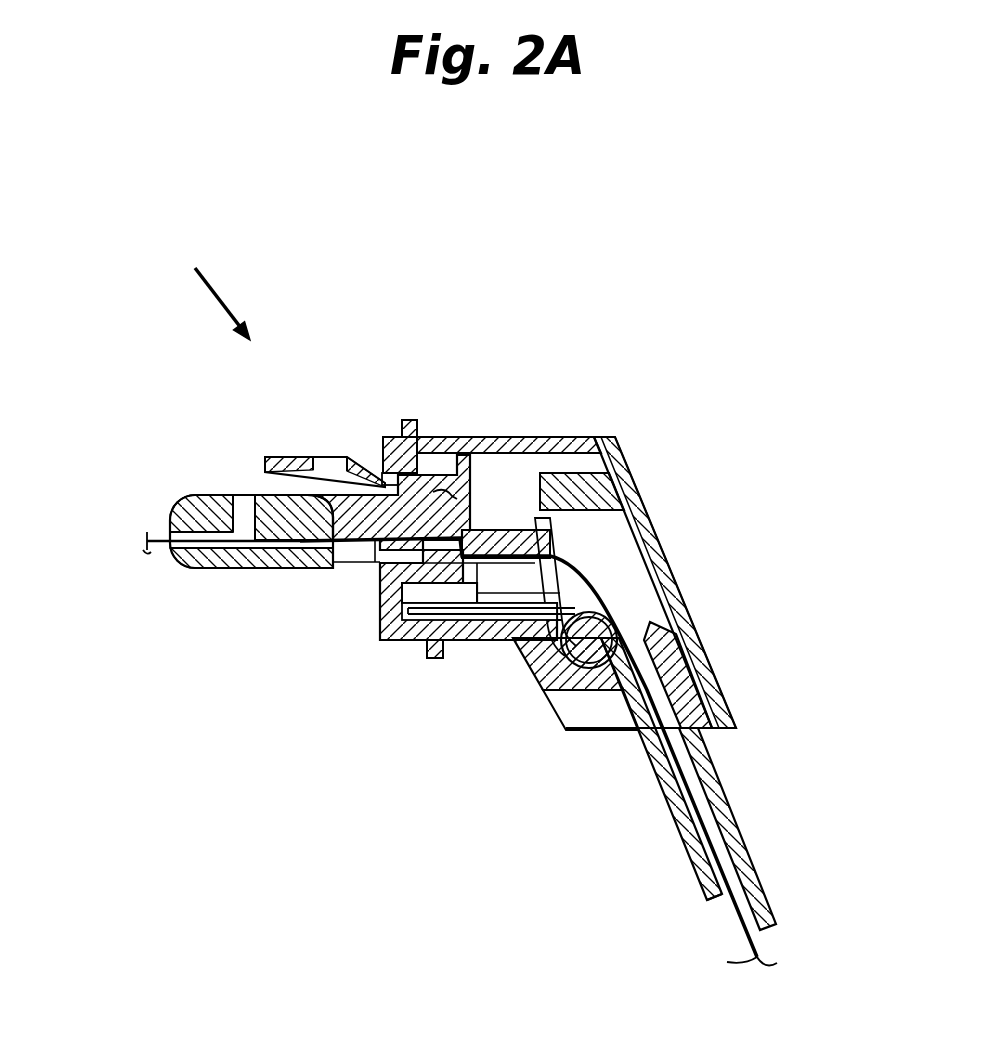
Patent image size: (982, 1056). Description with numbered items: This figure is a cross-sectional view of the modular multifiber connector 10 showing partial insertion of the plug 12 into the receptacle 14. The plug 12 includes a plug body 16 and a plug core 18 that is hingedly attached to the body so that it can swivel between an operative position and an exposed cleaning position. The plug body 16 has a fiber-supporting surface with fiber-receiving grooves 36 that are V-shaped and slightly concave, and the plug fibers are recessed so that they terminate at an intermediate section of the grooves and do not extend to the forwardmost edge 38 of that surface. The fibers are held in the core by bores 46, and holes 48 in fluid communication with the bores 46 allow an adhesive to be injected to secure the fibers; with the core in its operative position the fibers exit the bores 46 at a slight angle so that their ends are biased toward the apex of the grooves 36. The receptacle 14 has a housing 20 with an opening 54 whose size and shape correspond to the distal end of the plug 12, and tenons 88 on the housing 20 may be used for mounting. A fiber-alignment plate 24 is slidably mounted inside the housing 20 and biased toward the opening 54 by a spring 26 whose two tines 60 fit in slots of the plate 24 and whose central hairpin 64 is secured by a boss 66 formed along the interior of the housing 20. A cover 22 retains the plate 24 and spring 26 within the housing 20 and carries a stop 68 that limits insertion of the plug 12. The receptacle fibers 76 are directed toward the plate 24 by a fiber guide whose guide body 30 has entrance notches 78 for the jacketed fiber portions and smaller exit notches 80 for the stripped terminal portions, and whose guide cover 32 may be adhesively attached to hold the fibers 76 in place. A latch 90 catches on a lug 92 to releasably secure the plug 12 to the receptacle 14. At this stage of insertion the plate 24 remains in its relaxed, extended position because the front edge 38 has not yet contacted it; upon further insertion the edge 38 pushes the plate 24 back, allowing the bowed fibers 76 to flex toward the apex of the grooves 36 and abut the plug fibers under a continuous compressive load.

The modular multifiber connector 10 is at (198, 281).
The plug 12 is at (207, 571).
The receptacle 14 is at (613, 450).
The plug body 16 is at (417, 470).
The plug core 18 is at (205, 500).
The housing 20 is at (413, 640).
The cover 22 is at (643, 503).
The fiber-alignment plate 24 is at (550, 535).
The spring 26 is at (537, 683).
The guide body 30 is at (652, 777).
The guide cover 32 is at (745, 845).
The fiber-receiving grooves 36 is at (380, 568).
The forwardmost edge 38 is at (493, 527).
The bores 46 is at (172, 542).
The holes 48 is at (250, 497).
The opening 54 is at (382, 473).
The tines 60 is at (542, 520).
The central hairpin 64 is at (483, 640).
The boss 66 is at (383, 597).
The stop 68 is at (533, 470).
The fibers 76 is at (592, 593).
The entrance notches 78 is at (727, 900).
The exit notches 80 is at (683, 660).
The tenons 88 is at (404, 420).
The latch 90 is at (283, 457).
The lug 92 is at (455, 437).